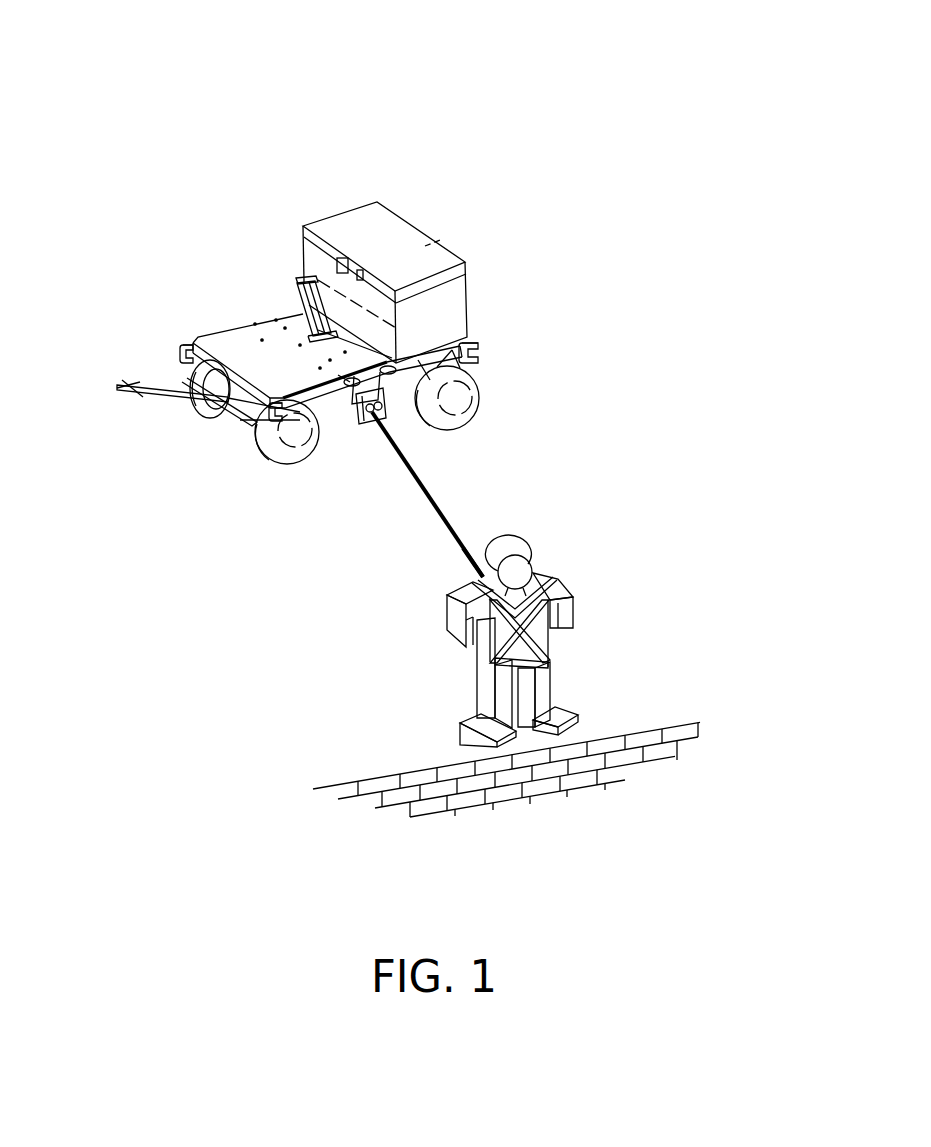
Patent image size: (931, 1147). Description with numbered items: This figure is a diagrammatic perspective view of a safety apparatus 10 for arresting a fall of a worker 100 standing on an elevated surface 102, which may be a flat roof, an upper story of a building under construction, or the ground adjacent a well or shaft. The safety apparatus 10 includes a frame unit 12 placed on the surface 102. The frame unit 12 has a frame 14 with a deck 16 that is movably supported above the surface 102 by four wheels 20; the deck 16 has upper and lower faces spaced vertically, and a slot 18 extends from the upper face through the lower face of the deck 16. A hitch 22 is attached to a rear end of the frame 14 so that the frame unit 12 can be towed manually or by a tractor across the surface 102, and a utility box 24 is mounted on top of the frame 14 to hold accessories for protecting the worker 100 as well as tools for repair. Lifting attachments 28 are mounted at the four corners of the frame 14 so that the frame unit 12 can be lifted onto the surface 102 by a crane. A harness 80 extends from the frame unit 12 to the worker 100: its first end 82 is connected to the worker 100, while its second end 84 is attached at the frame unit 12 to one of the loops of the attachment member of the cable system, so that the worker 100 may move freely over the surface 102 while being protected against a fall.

The safety apparatus 10 is at (430, 186).
The frame unit 12 is at (249, 306).
The frame 14 is at (243, 343).
The deck 16 is at (290, 370).
The slot 18 is at (300, 318).
The wheels 20 is at (278, 453).
The hitch 22 is at (161, 402).
The utility box 24 is at (455, 293).
The lifting attachments 28 is at (178, 345).
The harness 80 is at (428, 503).
The first end 82 is at (470, 563).
The second end 84 is at (380, 415).
The worker 100 is at (548, 565).
The surface 102 is at (716, 706).